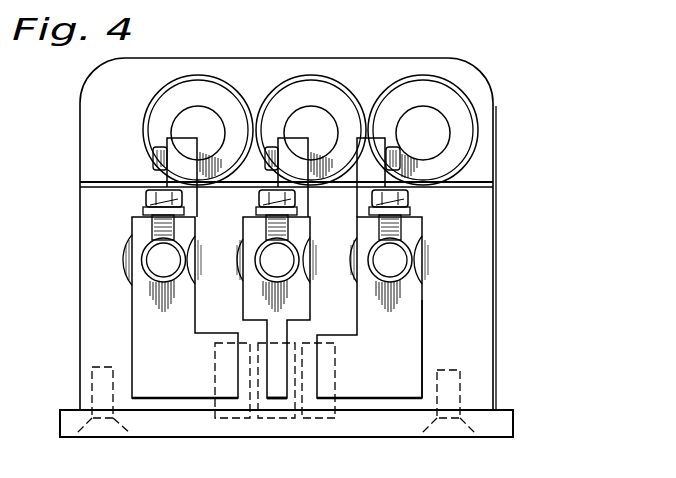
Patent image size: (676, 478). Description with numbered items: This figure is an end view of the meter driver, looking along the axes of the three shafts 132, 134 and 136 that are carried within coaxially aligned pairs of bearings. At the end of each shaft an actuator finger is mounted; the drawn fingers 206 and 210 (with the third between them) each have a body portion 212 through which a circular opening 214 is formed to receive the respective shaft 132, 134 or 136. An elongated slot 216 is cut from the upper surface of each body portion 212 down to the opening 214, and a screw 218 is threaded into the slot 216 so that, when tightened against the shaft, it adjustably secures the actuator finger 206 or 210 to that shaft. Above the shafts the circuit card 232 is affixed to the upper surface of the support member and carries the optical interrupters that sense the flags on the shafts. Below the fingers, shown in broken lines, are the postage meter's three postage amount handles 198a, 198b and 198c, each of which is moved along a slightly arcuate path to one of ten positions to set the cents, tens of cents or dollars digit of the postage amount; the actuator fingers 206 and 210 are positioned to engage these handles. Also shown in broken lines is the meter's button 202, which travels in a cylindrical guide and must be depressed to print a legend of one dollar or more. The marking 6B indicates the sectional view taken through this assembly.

The circuit card 232 is at (480, 180).
The screw 218 is at (397, 192).
The elongated slot 216 is at (398, 222).
The circular opening 214 is at (398, 252).
The shaft 132 is at (396, 259).
The body portion 212 is at (423, 328).
The shaft 134 is at (298, 271).
The shaft 136 is at (187, 268).
The actuator finger 210 is at (160, 404).
The actuator finger 206 is at (407, 400).
The postage amount handle 198a is at (337, 420).
The postage amount handle 198b is at (268, 420).
The postage amount handle 198c is at (228, 420).
The button 202 is at (283, 398).
The section line 6B is at (70, 435).